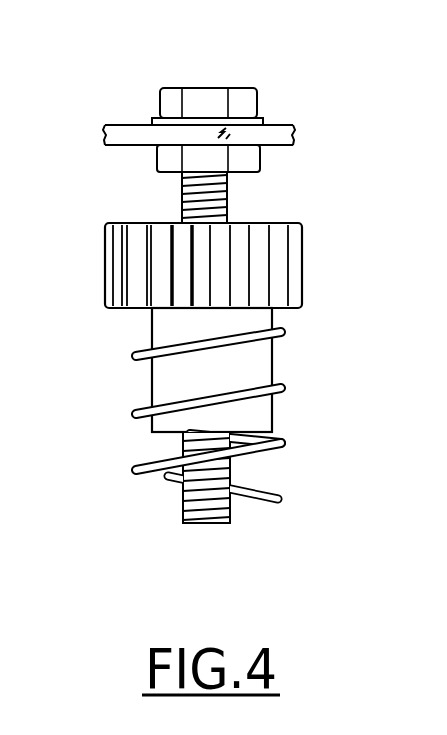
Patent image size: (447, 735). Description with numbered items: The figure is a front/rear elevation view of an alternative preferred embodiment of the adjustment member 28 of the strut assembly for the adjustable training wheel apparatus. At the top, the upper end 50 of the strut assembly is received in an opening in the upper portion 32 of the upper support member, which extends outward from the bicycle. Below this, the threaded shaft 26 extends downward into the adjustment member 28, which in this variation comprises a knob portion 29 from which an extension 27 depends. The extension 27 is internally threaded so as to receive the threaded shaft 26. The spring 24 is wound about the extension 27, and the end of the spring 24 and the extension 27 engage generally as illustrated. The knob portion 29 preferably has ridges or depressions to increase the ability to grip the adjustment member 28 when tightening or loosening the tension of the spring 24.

The upper end of the strut assembly 50 is at (163, 79).
The upper portion 32 is at (270, 128).
The threaded shaft 26 is at (187, 210).
The threaded adjustment member 28 is at (202, 265).
The knob portion 29 is at (302, 260).
The extension 27 is at (163, 390).
The spring 24 is at (282, 383).